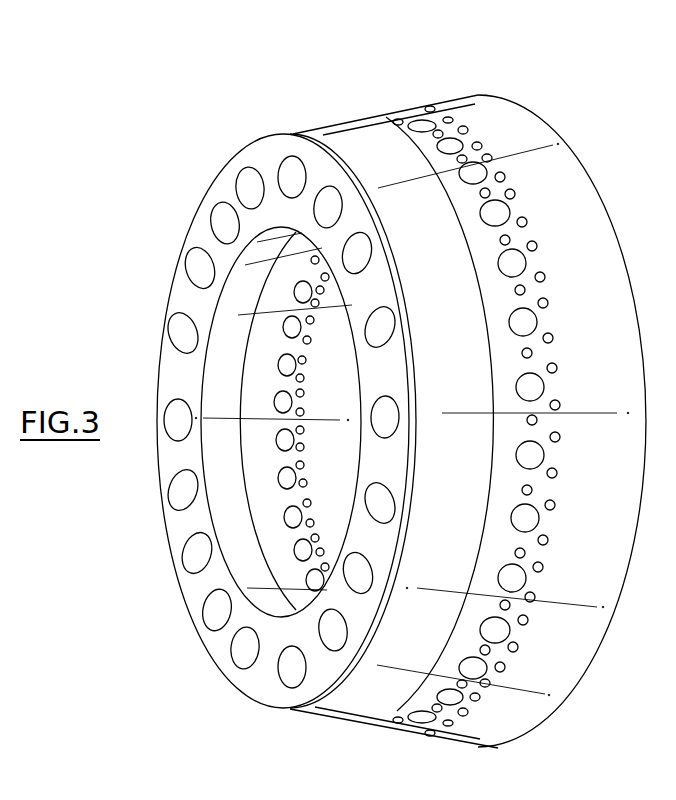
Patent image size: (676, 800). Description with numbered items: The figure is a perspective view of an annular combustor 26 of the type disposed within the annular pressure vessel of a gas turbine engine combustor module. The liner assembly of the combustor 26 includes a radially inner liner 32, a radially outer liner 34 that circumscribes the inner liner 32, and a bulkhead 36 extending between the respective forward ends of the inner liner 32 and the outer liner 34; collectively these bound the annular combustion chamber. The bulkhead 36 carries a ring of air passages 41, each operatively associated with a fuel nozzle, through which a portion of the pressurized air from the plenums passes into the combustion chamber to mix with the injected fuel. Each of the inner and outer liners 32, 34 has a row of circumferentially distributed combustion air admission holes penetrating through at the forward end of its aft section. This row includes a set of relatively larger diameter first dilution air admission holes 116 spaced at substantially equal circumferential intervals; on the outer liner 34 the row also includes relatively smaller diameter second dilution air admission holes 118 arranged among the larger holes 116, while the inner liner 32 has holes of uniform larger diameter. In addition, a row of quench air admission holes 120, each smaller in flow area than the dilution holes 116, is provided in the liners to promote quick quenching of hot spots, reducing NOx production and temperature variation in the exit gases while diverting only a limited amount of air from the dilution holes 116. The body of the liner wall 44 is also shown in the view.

The combustor 26 is at (401, 80).
The radially inner liner 32 is at (265, 332).
The radially outer liner 34 is at (350, 718).
The bulkhead 36 is at (230, 145).
The air passage 41 is at (292, 170).
The cylindrical liner wall 44 is at (570, 658).
The first dilution air admission holes 116 is at (288, 402).
The second dilution air admission holes 118 is at (526, 552).
The quench air admission holes 120 is at (304, 480).